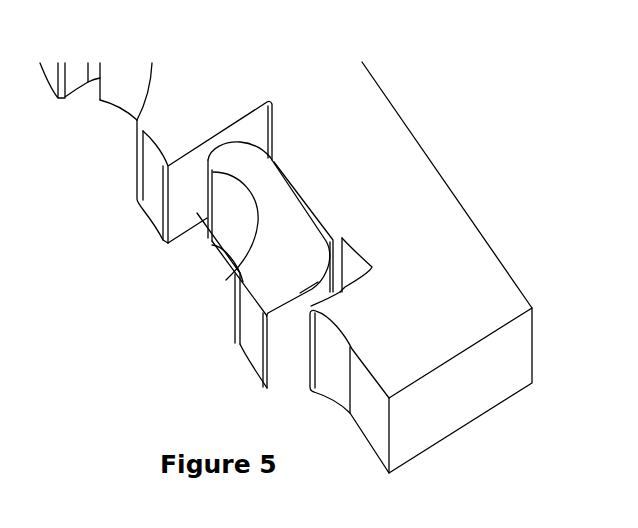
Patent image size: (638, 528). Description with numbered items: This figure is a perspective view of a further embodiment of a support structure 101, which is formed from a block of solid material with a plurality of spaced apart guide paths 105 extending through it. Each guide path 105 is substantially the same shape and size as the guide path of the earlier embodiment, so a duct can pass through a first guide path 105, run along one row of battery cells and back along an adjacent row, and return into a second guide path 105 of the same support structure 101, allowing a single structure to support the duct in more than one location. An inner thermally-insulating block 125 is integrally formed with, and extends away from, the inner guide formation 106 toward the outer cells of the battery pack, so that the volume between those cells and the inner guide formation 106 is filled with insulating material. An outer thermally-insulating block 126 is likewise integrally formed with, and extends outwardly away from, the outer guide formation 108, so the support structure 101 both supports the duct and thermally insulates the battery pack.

The support structure 101 is at (430, 345).
The inner thermally-insulating block 125 is at (260, 255).
The guide path 105 is at (288, 175).
The outer guide formation 108 is at (310, 200).
The inner guide formation 106 is at (316, 239).
The outer thermally-insulating block 126 is at (430, 188).